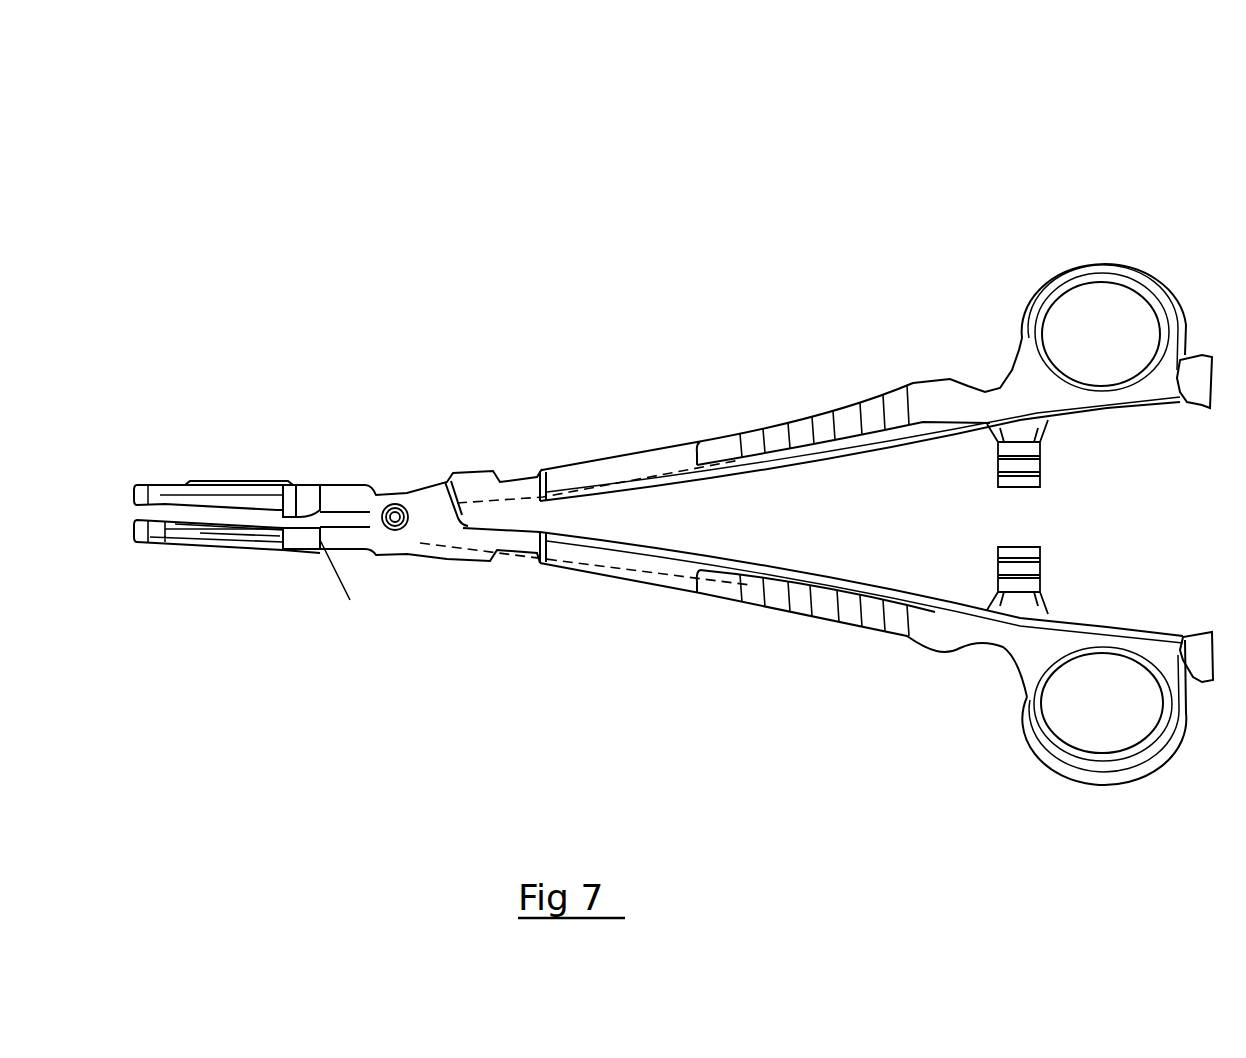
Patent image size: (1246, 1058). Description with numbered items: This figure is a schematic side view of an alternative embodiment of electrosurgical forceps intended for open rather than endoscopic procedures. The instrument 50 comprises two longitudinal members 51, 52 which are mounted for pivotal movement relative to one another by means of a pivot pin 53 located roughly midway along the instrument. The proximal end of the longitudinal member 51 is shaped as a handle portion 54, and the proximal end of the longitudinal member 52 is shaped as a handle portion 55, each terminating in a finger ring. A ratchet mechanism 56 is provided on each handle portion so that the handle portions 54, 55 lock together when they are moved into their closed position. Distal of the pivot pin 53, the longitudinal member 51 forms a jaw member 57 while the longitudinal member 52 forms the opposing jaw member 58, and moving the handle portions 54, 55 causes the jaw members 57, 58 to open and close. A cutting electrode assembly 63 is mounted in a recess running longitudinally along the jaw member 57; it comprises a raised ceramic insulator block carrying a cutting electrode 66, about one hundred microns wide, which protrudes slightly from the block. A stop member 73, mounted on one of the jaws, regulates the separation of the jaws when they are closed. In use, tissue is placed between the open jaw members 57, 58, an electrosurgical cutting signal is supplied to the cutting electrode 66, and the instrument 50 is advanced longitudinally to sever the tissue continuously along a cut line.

The instrument 50 is at (570, 401).
The longitudinal member 51 is at (673, 460).
The longitudinal member 52 is at (586, 560).
The pivot pin 53 is at (400, 525).
The handle portion 54 is at (1122, 258).
The handle portion 55 is at (1112, 788).
The ratchet mechanism 56 is at (1040, 553).
The jaw member 57 is at (245, 543).
The jaw member 58 is at (167, 487).
The cutting electrode assembly 63 is at (160, 541).
The cutting electrode 66 is at (187, 540).
The stop member 73 is at (300, 512).